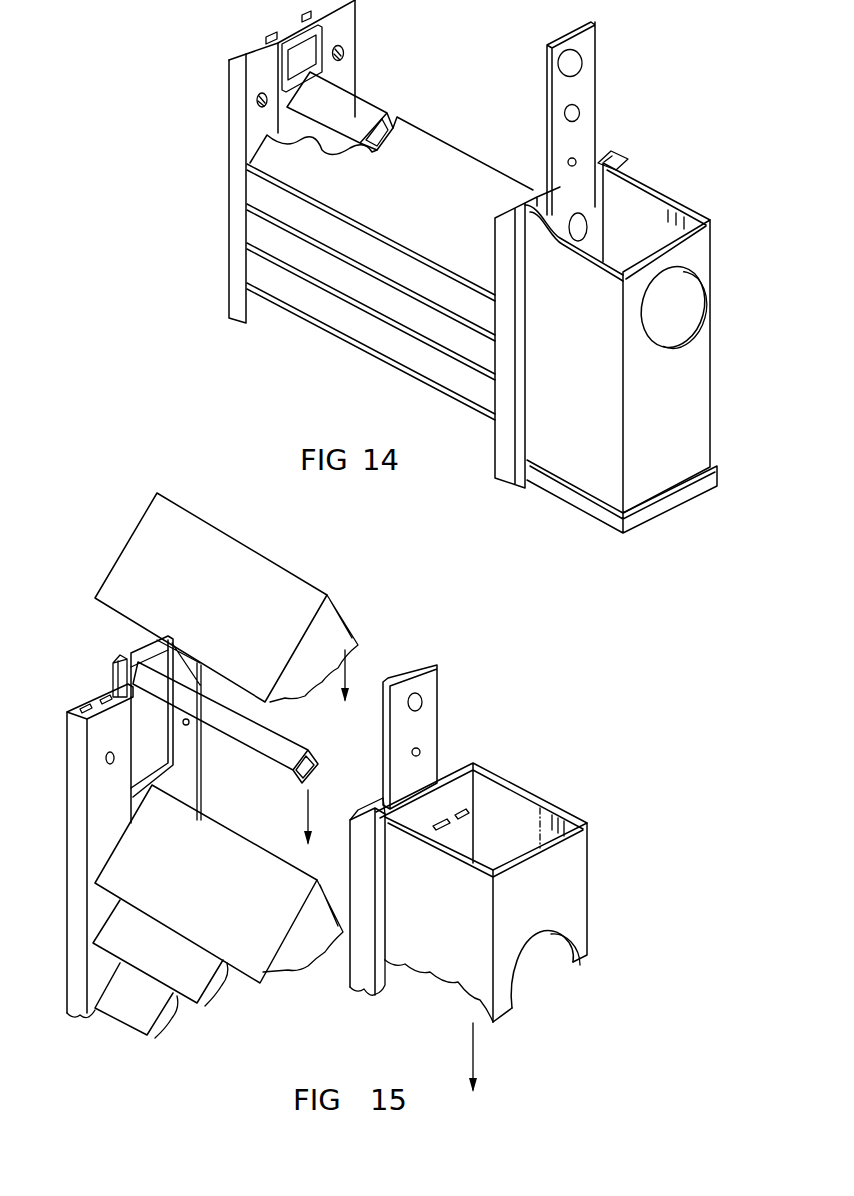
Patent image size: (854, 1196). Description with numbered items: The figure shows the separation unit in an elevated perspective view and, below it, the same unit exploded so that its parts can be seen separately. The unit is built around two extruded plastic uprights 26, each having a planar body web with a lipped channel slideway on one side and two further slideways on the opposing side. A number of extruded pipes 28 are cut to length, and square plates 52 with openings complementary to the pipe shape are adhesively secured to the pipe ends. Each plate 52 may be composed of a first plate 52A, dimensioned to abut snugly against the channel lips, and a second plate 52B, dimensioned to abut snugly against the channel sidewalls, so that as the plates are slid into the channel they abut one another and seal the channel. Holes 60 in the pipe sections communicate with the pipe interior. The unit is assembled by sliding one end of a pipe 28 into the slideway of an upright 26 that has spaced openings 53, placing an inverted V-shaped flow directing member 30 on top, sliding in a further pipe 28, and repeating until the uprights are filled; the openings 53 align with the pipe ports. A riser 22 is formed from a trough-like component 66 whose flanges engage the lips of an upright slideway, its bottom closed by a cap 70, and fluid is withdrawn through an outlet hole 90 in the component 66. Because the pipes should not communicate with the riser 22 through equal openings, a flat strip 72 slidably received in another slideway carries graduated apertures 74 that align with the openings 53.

In FIG. 14, the riser 22 is at (645, 336).
In FIG. 15, the riser 22 is at (510, 898).
In FIG. 14, the upright 26 is at (237, 204).
In FIG. 15, the upright 26 is at (84, 823).
In FIG. 14, the pipe 28 is at (353, 119).
In FIG. 15, the pipe 28 is at (253, 735).
In FIG. 14, the inverted V-shaped flow directing member 30 is at (444, 220).
In FIG. 15, the inverted V-shaped flow directing member 30 is at (232, 607).
In FIG. 14, the square plate 52 is at (297, 72).
In FIG. 15, the square plate 52 is at (134, 740).
In FIG. 15, the first plate 52A is at (142, 700).
In FIG. 15, the second plate 52B is at (113, 680).
In FIG. 14, the opening 53 is at (580, 224).
In FIG. 14, the hole 60 is at (373, 128).
In FIG. 14, the trough-like component 66 is at (693, 418).
In FIG. 15, the trough-like component 66 is at (573, 883).
In FIG. 14, the cap 70 is at (567, 493).
In FIG. 14, the flat strip 72 is at (602, 118).
In FIG. 15, the flat strip 72 is at (438, 730).
In FIG. 14, the graduated aperture 74 is at (573, 62).
In FIG. 15, the graduated aperture 74 is at (418, 700).
In FIG. 14, the outlet hole 90 is at (680, 306).
In FIG. 15, the outlet hole 90 is at (537, 957).